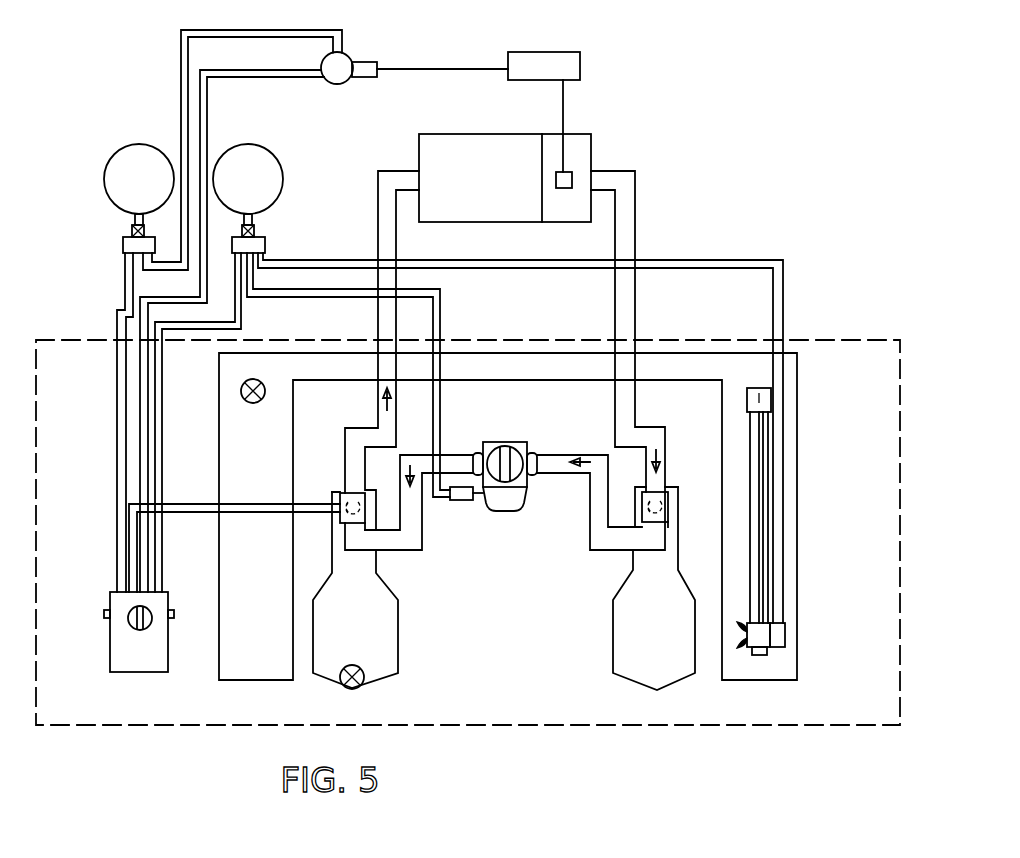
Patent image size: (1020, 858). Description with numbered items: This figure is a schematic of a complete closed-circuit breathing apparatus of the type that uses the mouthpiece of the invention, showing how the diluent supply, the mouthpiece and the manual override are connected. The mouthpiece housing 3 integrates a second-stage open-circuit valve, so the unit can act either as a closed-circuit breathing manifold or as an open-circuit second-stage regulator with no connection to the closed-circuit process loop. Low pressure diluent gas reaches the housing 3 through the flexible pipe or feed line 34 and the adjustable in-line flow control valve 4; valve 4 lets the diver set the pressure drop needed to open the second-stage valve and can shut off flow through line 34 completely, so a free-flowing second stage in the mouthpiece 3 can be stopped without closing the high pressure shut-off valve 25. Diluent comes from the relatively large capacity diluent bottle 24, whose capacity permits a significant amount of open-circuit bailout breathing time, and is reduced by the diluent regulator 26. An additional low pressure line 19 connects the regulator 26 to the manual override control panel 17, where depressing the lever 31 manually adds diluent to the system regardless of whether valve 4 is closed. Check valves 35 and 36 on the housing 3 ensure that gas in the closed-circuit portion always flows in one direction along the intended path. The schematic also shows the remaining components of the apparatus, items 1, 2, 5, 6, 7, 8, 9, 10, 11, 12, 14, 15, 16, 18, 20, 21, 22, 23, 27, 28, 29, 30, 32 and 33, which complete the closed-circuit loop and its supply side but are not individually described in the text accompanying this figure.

The first liquid container 1 is at (370, 598).
The indicator lamp 2 is at (352, 689).
The housing 3 is at (490, 442).
The adjustable in-line flow control valve 4 is at (460, 500).
The conduit 5 is at (409, 502).
The valve 6 is at (346, 492).
The conduit 7 is at (329, 517).
The conduit 8 is at (382, 350).
The conduit 9 is at (601, 360).
The valve 10 is at (663, 497).
The second liquid container 11 is at (640, 600).
The conduit 12 is at (608, 537).
The indicator lamp 14 is at (241, 391).
The sight glass 15 is at (760, 635).
The conduit 16 is at (784, 293).
The manual override control panel 17 is at (158, 658).
The conduit 18 is at (118, 472).
The low pressure line 19 is at (157, 425).
The conduit 20 is at (141, 453).
The connection block 21 is at (125, 244).
The shut-off valve 22 is at (143, 231).
The pressure gauge 23 is at (139, 184).
The diluent bottle 24 is at (248, 184).
The high pressure shut-off valve 25 is at (254, 228).
The diluent regulator 26 is at (263, 243).
The pressure regulator 27 is at (414, 68).
The control unit 28 is at (544, 112).
The housing 29 is at (505, 178).
The sensor 30 is at (563, 188).
The lever 31 is at (177, 613).
The indicator 32 is at (148, 624).
The connector 33 is at (104, 615).
The flexible pipe 34 is at (435, 413).
The check valve 35 is at (478, 462).
The check valve 36 is at (532, 460).